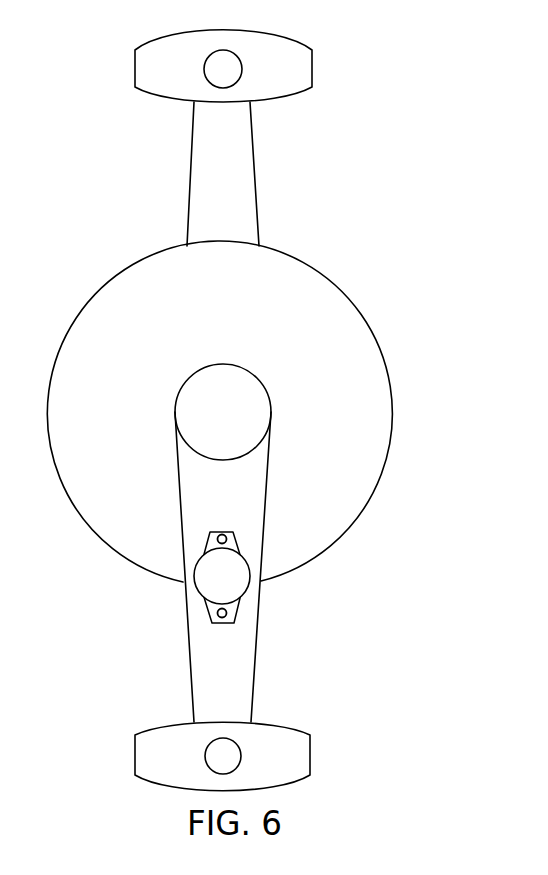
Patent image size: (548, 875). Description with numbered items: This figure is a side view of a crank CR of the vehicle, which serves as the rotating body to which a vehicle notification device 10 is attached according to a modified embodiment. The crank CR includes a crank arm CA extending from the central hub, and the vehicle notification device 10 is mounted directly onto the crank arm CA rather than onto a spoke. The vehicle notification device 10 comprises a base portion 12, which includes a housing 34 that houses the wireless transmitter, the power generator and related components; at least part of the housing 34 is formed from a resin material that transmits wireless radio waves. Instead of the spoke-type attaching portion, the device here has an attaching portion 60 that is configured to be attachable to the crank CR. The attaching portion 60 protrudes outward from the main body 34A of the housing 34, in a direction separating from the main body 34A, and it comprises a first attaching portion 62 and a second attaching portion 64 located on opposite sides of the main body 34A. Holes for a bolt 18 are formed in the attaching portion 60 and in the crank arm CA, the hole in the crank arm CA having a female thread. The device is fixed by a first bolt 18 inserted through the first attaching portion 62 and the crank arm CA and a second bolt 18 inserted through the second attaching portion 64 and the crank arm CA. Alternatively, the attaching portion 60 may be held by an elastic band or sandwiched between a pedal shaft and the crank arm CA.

The vehicle notification device 10 is at (244, 548).
The base portion 12 is at (200, 548).
The bolt 18 is at (219, 534).
The housing 34 is at (246, 590).
The main body 34A is at (209, 583).
The attaching portion 60 is at (280, 564).
The first attaching portion 62 is at (229, 532).
The second attaching portion 64 is at (236, 615).
The crank arm CA is at (200, 168).
The crank CR is at (387, 72).